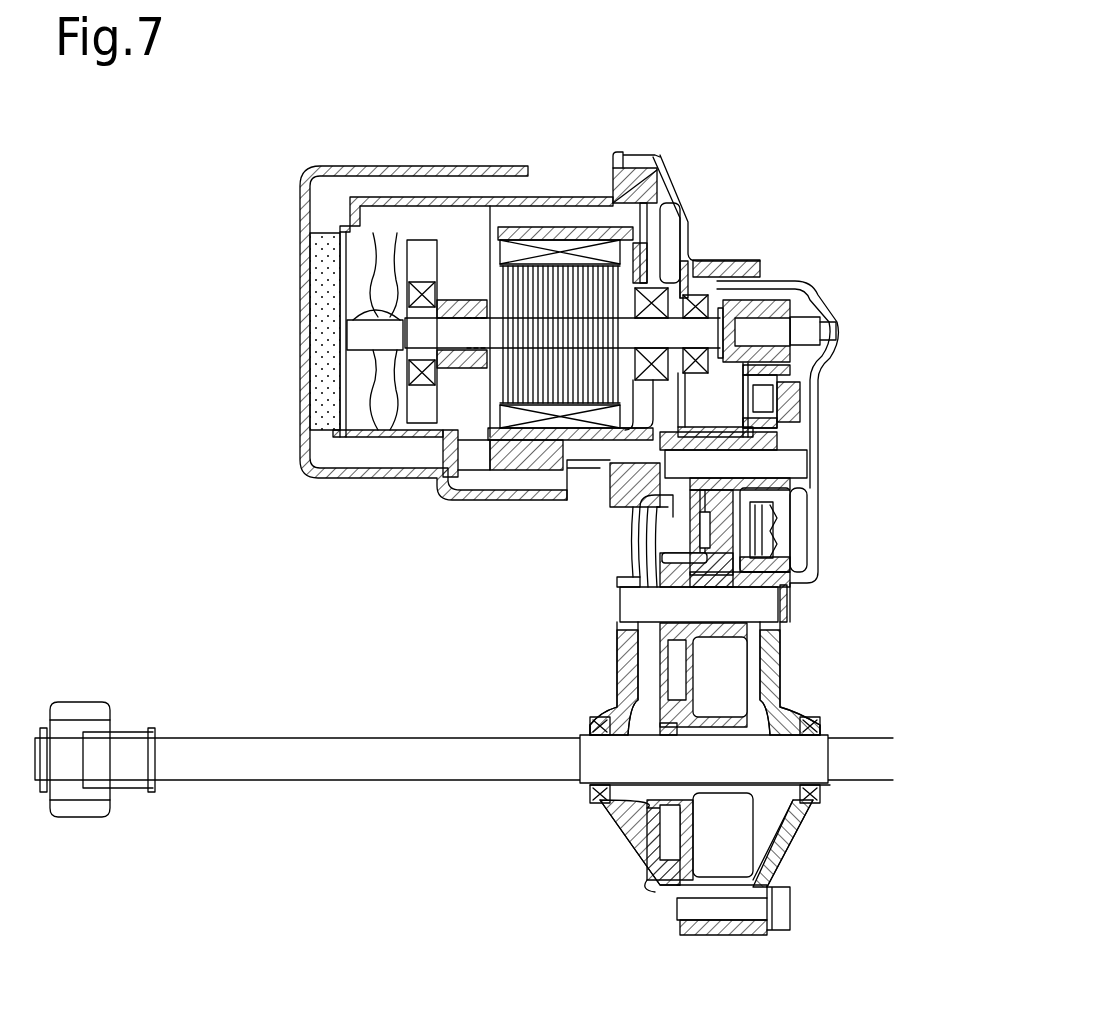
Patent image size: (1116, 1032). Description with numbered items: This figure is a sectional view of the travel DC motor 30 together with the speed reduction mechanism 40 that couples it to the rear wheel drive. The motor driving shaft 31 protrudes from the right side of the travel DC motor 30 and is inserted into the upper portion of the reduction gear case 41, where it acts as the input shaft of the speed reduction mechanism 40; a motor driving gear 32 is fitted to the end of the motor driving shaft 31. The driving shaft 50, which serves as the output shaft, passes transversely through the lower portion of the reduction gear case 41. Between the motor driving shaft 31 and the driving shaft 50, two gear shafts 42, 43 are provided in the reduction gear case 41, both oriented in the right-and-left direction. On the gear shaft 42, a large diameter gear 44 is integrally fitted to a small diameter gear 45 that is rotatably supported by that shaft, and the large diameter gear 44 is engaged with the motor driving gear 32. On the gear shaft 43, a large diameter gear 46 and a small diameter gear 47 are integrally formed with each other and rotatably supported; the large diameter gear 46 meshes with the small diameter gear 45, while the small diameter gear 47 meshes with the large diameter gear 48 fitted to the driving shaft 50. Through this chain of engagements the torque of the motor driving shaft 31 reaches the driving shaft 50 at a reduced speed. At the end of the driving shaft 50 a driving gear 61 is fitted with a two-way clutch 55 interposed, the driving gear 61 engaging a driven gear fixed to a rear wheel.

The travel DC motor 30 is at (526, 150).
The motor driving shaft 31 is at (680, 330).
The motor driving gear 32 is at (775, 297).
The speed reduction mechanism 40 is at (826, 558).
The reduction gear case 41 is at (807, 585).
The gear shaft 42 is at (790, 465).
The gear shaft 43 is at (635, 602).
The large diameter gear 44 is at (795, 378).
The small diameter gear 45 is at (640, 480).
The large diameter gear 46 is at (740, 705).
The small diameter gear 47 is at (662, 555).
The large diameter gear 48 is at (650, 858).
The driving shaft 50 is at (400, 780).
The two-way clutch 55 is at (110, 737).
The driving gear 61 is at (70, 815).